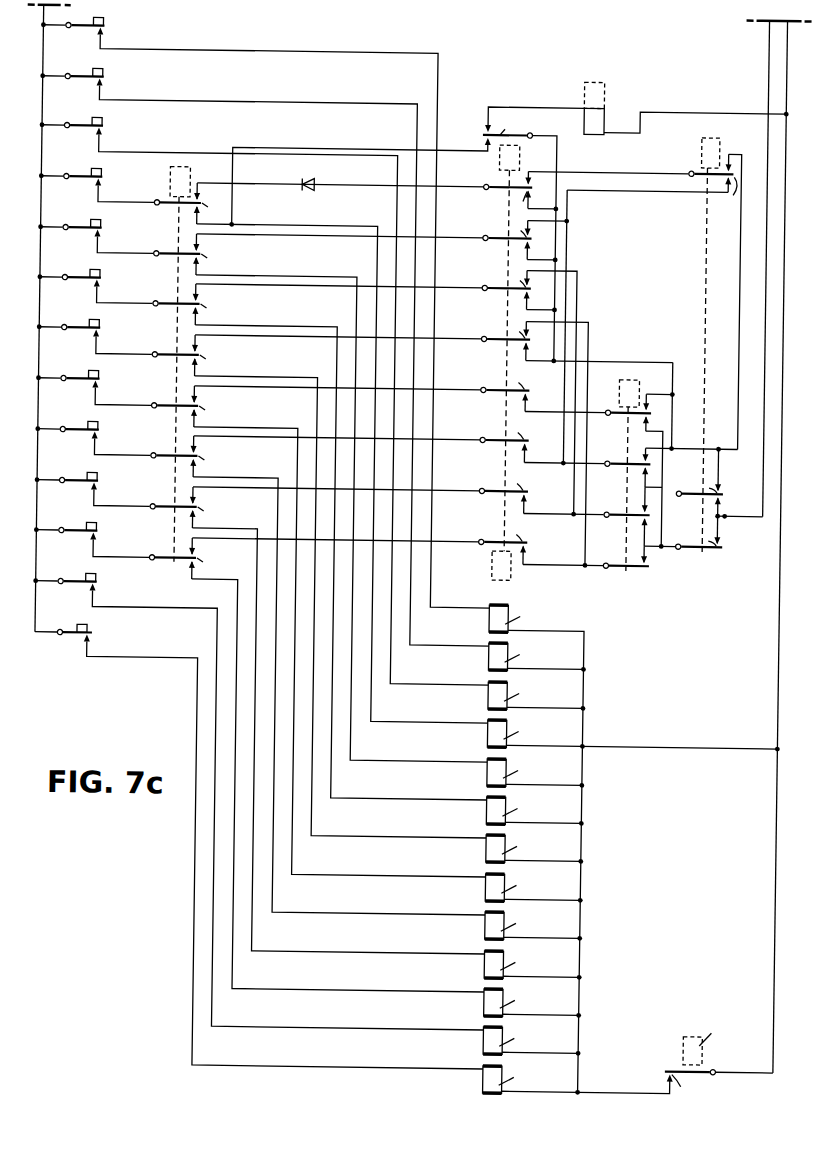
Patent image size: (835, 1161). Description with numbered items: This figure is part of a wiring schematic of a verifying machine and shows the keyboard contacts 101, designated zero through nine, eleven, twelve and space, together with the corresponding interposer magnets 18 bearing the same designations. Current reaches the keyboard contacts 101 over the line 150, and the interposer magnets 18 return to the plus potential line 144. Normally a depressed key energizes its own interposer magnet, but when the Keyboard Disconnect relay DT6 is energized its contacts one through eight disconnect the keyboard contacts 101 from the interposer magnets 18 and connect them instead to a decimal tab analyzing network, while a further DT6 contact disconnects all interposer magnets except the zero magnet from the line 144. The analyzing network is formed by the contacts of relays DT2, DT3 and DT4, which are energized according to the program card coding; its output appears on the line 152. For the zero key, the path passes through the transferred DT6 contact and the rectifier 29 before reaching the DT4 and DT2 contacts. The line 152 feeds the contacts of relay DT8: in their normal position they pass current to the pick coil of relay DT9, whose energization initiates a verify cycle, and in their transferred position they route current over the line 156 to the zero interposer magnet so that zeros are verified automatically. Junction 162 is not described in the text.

The line 150 is at (37, 61).
The keyboard contacts 101 is at (71, 641).
The line 156 is at (229, 215).
The rectifier 29 is at (311, 185).
The plus potential line 144 is at (780, 54).
The line 152 is at (671, 420).
The junction conductor of DT2 contacts 1 and 2 162 is at (725, 514).
The interposer magnets 18 is at (556, 627).
The Keyboard Disconnect relay DT6 is at (165, 182).
The relay DT8 is at (494, 158).
The relay DT9 is at (600, 117).
The relay DT2 is at (696, 151).
The relay DT3 is at (629, 377).
The relay DT4 is at (492, 572).